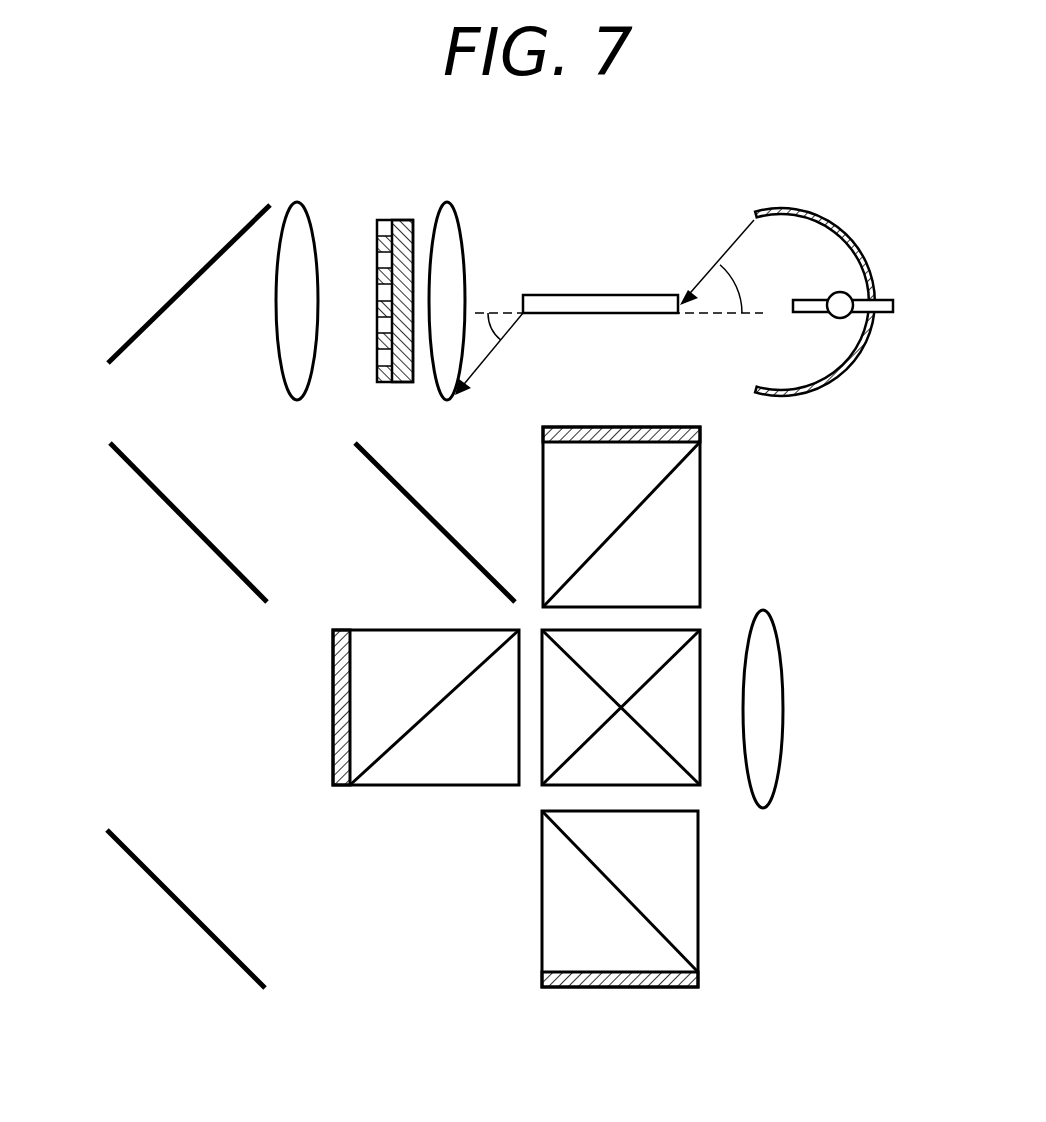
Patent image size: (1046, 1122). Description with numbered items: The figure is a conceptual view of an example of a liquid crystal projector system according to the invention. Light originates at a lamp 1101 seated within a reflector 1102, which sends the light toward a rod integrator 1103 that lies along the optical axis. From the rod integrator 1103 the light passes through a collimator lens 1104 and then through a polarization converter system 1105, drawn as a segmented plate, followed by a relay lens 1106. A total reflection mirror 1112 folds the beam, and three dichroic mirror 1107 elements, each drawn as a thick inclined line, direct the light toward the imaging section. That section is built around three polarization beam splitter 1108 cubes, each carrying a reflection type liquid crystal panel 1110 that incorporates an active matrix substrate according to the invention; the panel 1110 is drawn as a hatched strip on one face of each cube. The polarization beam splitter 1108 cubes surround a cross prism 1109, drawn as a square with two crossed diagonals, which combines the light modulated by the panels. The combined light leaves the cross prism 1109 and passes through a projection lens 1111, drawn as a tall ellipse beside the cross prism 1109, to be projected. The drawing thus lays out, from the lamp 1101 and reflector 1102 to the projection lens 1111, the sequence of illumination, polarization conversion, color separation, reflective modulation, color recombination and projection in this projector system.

The lamp 1101 is at (846, 318).
The reflector 1102 is at (854, 237).
The rod integrator 1103 is at (628, 295).
The collimator lens 1104 is at (460, 222).
The polarization converter system 1105 is at (402, 220).
The relay lens 1106 is at (305, 207).
The dichroic mirror 1107 is at (195, 530).
The polarization beam splitter 1108 is at (690, 496).
The cross prism 1109 is at (701, 652).
The reflection type liquid crystal panel 1110 is at (632, 427).
The projection lens 1111 is at (773, 697).
The total reflection mirror 1112 is at (198, 275).